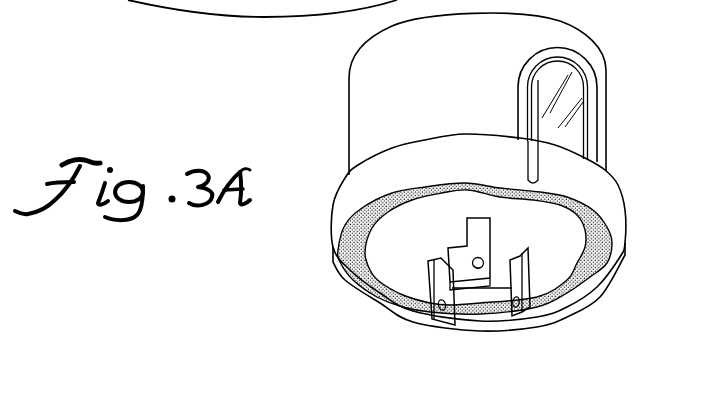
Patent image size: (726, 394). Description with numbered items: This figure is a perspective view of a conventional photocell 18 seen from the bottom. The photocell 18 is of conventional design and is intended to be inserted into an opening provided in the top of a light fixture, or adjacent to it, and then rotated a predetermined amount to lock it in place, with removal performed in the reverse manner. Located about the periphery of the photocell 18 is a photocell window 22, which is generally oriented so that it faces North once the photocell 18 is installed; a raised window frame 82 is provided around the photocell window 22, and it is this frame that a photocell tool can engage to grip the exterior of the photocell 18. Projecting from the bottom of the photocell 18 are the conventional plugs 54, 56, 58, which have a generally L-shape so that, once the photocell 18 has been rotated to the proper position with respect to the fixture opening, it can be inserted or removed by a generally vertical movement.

The photocell 18 is at (326, 98).
The photocell window 22 is at (580, 131).
The raised window frame 82 is at (570, 58).
The plug 54 is at (432, 322).
The plug 56 is at (461, 252).
The plug 58 is at (555, 260).